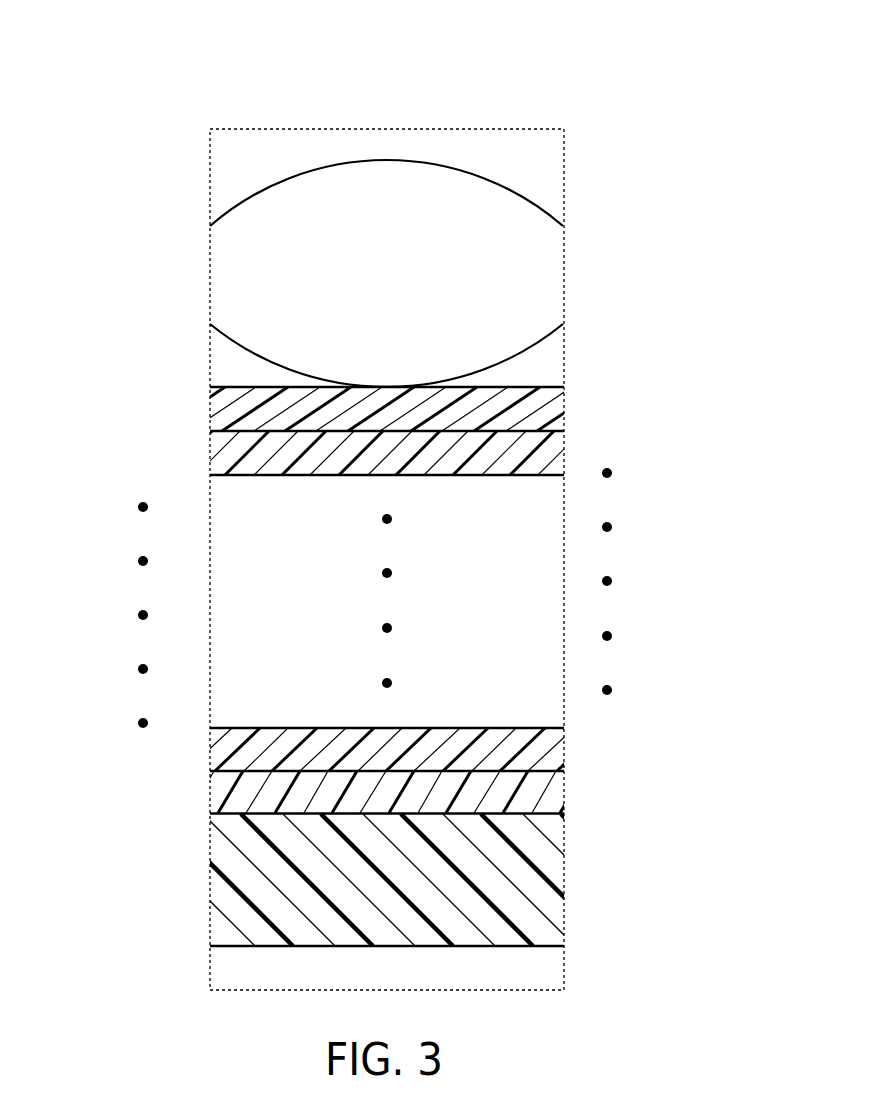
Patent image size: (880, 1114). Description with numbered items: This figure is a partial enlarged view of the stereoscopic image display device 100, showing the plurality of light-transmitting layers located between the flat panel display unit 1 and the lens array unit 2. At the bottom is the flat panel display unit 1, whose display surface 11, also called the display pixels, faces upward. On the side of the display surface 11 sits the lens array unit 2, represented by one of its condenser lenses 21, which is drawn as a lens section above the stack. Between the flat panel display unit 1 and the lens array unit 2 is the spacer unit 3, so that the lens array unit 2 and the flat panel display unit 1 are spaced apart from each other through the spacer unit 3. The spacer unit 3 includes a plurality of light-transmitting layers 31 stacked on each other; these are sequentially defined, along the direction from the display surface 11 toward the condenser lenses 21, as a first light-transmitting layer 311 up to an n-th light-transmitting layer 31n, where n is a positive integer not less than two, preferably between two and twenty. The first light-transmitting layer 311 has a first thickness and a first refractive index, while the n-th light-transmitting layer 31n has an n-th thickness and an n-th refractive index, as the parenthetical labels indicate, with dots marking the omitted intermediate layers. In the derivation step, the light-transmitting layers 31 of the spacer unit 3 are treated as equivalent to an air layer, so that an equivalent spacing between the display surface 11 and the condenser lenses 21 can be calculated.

The stereoscopic image display device 100 is at (745, 40).
The lens array unit 2 is at (389, 152).
The condenser lenses 21 is at (545, 280).
The spacer unit 3 is at (334, 615).
The light-transmitting layers 31 is at (358, 615).
The n-th light-transmitting layer 31n is at (212, 412).
The first light-transmitting layer 311 is at (340, 807).
The display surface 11 is at (543, 811).
The flat panel display unit 1 is at (552, 873).